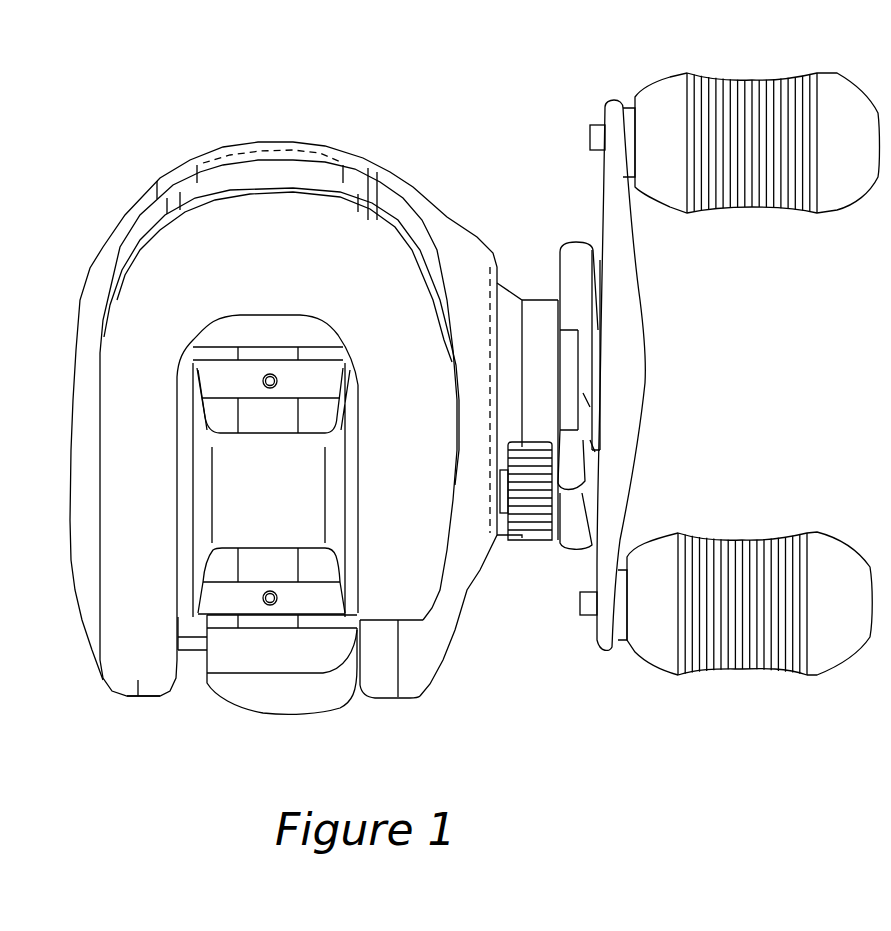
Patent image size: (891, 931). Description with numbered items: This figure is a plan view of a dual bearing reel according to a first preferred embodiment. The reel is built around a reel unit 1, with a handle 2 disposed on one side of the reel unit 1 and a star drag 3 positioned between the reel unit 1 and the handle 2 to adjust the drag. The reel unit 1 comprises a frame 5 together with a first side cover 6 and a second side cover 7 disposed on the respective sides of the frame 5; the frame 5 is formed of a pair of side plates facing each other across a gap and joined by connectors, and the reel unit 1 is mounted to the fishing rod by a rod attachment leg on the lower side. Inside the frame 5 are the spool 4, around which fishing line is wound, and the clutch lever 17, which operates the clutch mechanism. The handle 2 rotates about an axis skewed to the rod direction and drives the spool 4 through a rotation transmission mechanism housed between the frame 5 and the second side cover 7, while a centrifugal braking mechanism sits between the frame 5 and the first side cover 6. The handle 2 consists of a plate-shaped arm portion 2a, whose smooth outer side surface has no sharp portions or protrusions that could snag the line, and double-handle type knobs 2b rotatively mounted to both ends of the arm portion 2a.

The reel unit 1 is at (127, 148).
The handle 2 is at (730, 352).
The arm portion 2a is at (623, 270).
The knobs 2b is at (747, 78).
The star drag 3 is at (568, 247).
The spool 4 is at (248, 495).
The frame 5 is at (151, 705).
The first side cover 6 is at (100, 679).
The second side cover 7 is at (420, 667).
The clutch lever 17 is at (258, 703).